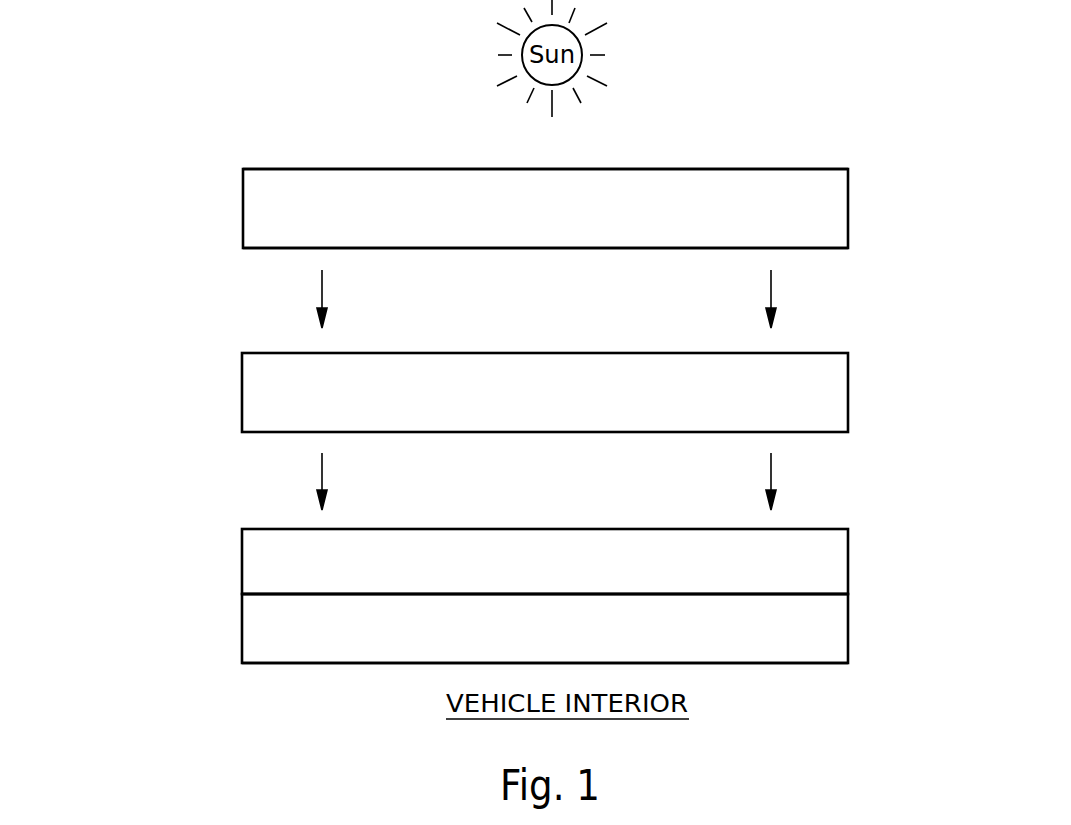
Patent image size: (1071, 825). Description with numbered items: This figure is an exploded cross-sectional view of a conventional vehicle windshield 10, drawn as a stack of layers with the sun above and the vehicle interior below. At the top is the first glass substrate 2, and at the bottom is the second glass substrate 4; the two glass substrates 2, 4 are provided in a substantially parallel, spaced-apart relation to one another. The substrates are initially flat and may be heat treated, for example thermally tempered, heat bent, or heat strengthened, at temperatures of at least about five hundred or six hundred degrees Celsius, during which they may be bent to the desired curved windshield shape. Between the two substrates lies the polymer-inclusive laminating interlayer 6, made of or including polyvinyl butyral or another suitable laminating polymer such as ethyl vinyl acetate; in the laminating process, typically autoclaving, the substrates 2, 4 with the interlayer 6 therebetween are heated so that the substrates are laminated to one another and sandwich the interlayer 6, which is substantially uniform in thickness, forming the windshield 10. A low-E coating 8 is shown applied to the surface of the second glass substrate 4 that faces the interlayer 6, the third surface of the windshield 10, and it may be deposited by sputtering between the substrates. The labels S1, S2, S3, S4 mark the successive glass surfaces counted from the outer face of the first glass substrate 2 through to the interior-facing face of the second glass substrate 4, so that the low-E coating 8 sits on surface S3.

The first glass substrate 2 is at (848, 207).
The second glass substrate 4 is at (848, 628).
The polymer-inclusive laminating interlayer 6 is at (848, 395).
The low-E coating 8 is at (242, 555).
The vehicle windshield 10 is at (63, 352).
The exterior surface of first glass substrate S1 is at (727, 169).
The interior surface of first glass substrate S2 is at (403, 248).
The surface of second glass substrate facing interlayer S3 is at (800, 593).
The interior surface of second glass substrate S4 is at (762, 663).